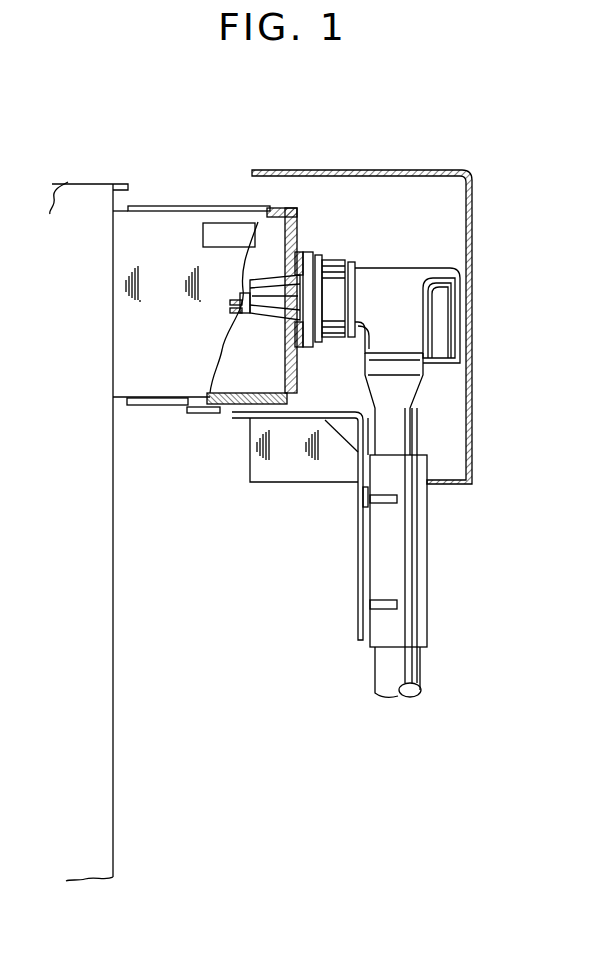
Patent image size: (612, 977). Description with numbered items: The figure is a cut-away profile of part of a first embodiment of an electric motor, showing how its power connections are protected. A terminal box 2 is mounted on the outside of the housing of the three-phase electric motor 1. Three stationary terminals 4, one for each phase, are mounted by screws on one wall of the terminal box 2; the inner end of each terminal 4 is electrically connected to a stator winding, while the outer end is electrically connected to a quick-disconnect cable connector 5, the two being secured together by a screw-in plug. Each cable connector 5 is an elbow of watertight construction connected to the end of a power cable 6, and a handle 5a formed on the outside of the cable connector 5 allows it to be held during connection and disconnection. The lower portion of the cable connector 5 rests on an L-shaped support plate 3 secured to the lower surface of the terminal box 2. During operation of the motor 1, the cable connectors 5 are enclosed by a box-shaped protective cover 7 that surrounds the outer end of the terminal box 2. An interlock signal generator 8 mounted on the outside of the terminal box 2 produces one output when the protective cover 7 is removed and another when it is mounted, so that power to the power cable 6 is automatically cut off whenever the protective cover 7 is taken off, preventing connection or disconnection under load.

The three-phase electric motor 1 is at (68, 182).
The terminal box 2 is at (188, 203).
The L-shaped support plate 3 is at (358, 540).
The stationary terminal 4 is at (272, 322).
The quick-disconnect cable connector 5 is at (386, 268).
The handle 5a is at (463, 325).
The power cable 6 is at (405, 668).
The protective cover 7 is at (397, 167).
The interlock signal generator 8 is at (232, 222).